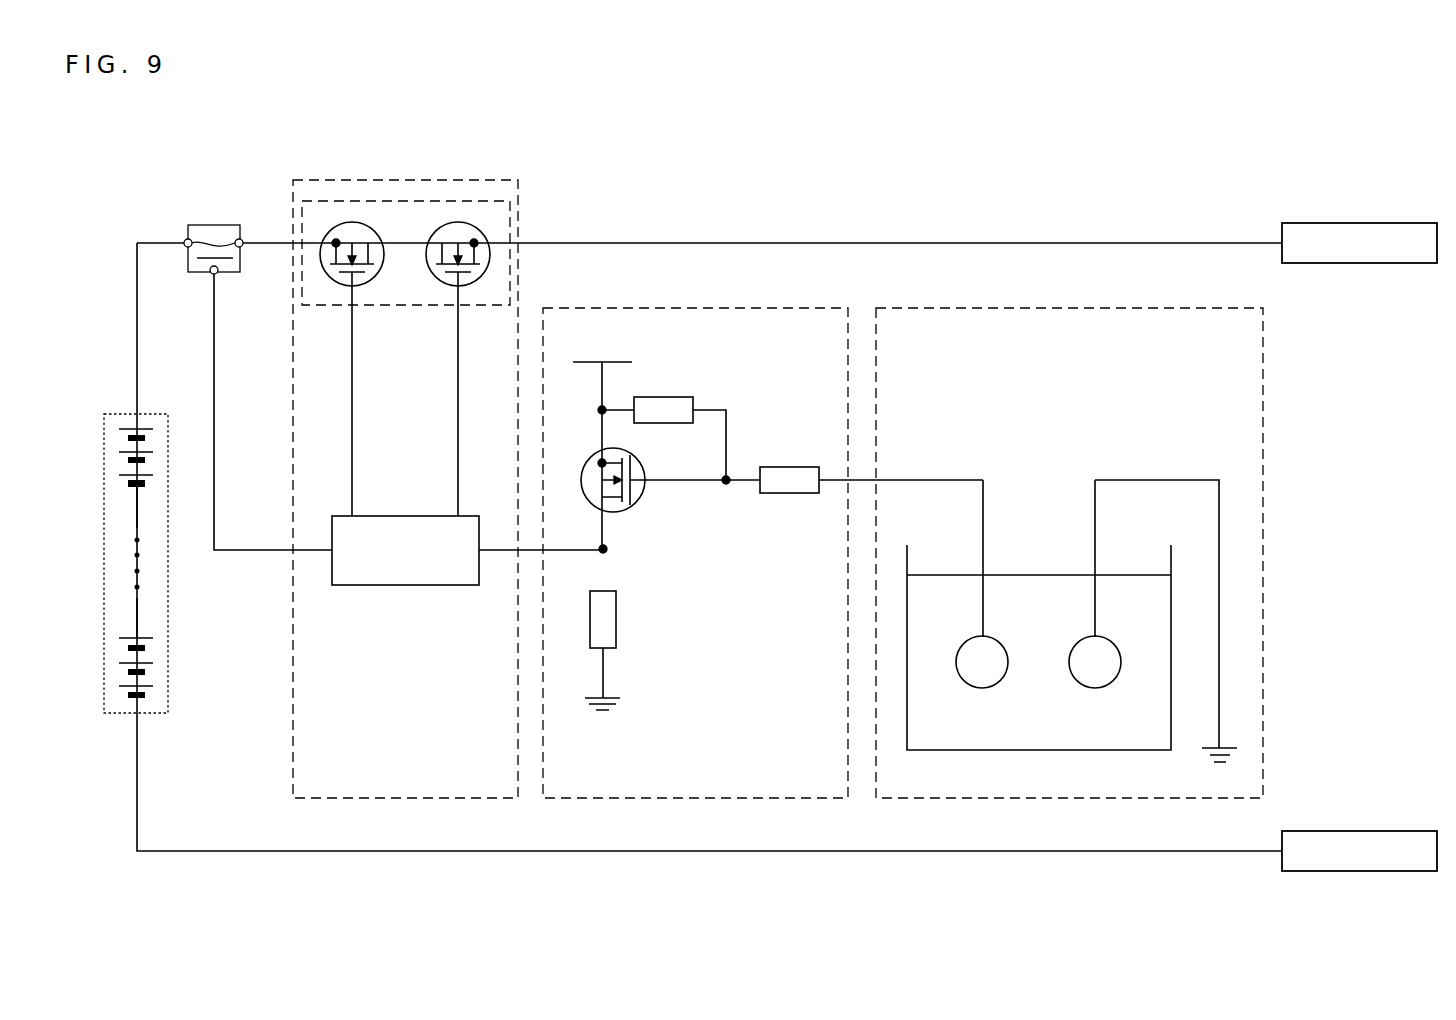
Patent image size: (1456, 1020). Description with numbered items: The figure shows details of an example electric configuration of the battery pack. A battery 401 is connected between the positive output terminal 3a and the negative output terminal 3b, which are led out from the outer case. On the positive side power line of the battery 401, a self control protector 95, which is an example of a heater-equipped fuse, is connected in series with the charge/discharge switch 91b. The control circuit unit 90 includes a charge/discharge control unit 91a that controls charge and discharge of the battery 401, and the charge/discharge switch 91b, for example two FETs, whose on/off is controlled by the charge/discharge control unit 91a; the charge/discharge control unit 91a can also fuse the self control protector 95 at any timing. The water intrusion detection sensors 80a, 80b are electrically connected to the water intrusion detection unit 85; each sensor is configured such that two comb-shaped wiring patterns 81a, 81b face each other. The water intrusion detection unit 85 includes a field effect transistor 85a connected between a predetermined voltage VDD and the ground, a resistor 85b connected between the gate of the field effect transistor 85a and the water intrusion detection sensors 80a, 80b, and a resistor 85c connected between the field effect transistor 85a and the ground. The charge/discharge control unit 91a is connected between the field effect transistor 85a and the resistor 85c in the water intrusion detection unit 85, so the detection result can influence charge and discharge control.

The self control protector 95 is at (213, 208).
The control circuit unit 90 is at (443, 180).
The charge/discharge switch 91b is at (415, 308).
The charge/discharge control unit 91a is at (405, 515).
The water intrusion detection unit 85 is at (705, 307).
The field effect transistor 85a is at (631, 507).
The resistor 85b is at (788, 466).
The resistor 85c is at (617, 623).
The water intrusion detection sensor 80a is at (1075, 307).
The water intrusion detection sensor 80b is at (1072, 514).
The comb-shaped wiring pattern 81a is at (1096, 688).
The comb-shaped wiring pattern 81b is at (983, 688).
The battery 401 is at (168, 667).
The positive output terminal 3a is at (1357, 223).
The negative output terminal 3b is at (1357, 831).